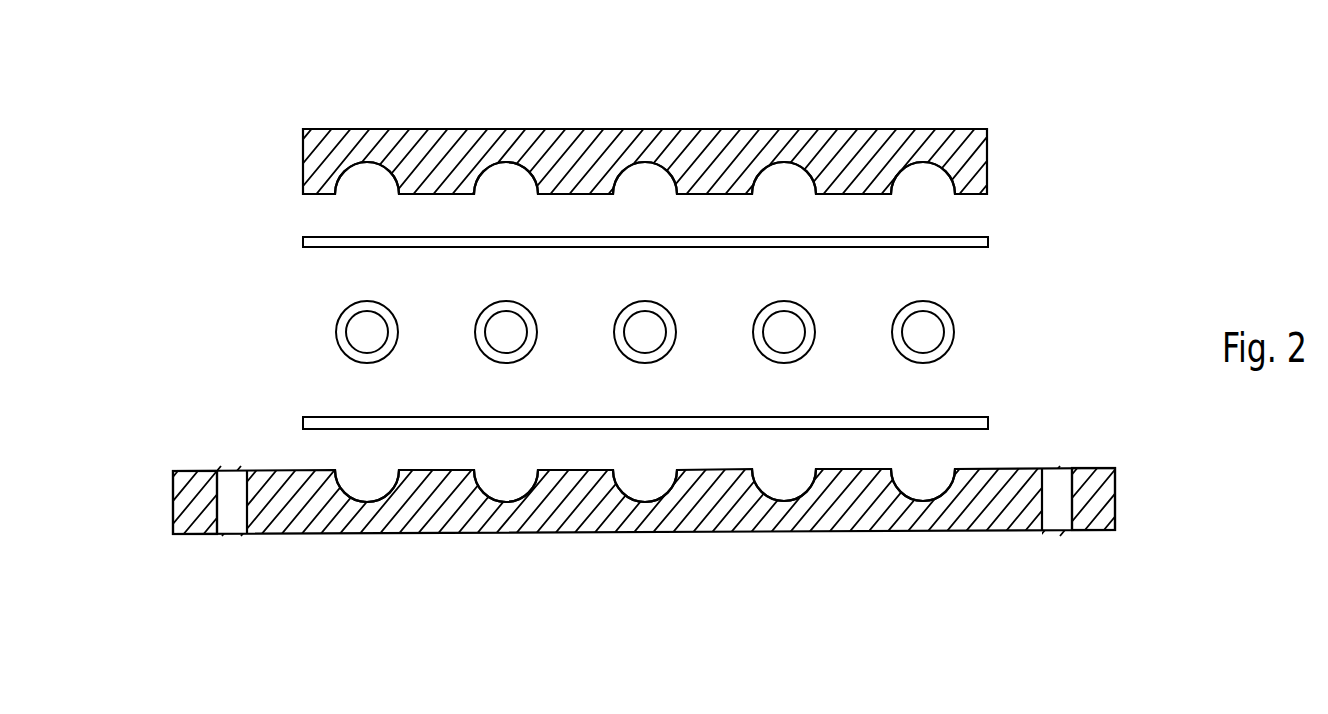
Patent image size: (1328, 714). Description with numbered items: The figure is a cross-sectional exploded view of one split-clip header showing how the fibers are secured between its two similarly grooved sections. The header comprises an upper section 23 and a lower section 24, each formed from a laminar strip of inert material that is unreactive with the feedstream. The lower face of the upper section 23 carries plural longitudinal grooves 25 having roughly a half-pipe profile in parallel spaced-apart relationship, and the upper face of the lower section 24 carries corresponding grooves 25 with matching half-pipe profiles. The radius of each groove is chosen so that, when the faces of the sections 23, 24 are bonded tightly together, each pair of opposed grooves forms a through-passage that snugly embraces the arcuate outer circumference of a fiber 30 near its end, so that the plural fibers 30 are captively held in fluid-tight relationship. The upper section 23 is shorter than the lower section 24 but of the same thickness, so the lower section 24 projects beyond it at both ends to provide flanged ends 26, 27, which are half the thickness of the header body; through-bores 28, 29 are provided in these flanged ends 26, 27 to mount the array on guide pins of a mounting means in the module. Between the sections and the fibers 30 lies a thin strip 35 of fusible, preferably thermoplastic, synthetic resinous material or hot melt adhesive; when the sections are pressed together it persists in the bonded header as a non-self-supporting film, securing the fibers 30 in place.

The upper section 23 is at (828, 128).
The lower section 24 is at (628, 533).
The longitudinal grooves 25 is at (512, 170).
The flanged end 26 is at (1007, 518).
The flanged end 27 is at (273, 532).
The through-bore 28 is at (1063, 519).
The through-bore 29 is at (215, 485).
The fibers 30 is at (335, 335).
The thin strip 35 is at (987, 245).